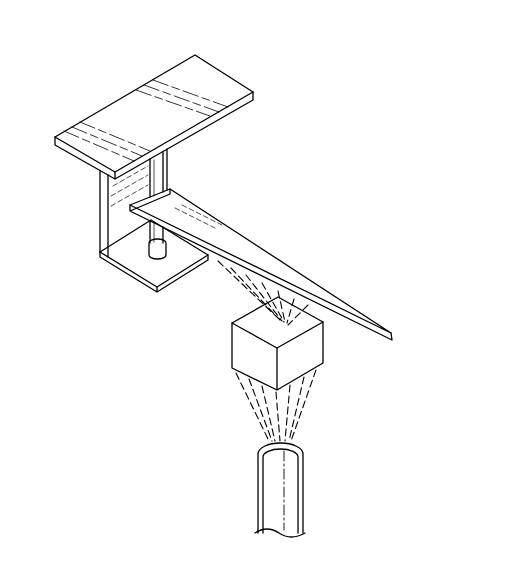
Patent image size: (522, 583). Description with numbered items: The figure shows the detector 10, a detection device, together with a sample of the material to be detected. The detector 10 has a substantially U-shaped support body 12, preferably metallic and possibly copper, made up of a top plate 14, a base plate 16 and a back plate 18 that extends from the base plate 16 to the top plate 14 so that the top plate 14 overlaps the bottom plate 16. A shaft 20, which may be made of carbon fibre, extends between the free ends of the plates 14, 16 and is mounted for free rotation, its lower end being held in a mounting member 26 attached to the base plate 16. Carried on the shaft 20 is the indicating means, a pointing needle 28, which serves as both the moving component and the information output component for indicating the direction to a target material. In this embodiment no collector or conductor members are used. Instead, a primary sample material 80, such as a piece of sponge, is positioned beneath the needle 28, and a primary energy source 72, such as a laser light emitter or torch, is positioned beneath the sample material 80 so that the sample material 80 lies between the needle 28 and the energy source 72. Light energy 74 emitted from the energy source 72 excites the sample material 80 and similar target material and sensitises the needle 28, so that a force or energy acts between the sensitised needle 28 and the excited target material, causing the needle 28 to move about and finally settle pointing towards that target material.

The detector 10 is at (289, 113).
The support body 12 is at (88, 87).
The top plate 14 is at (200, 78).
The base plate 16 is at (140, 247).
The back plate 18 is at (117, 190).
The shaft 20 is at (158, 172).
The mounting member 26 is at (168, 247).
The pointing needle 28 is at (252, 252).
The primary energy source 72 is at (268, 488).
The light energy 74 is at (308, 418).
The primary sample material 80 is at (300, 352).